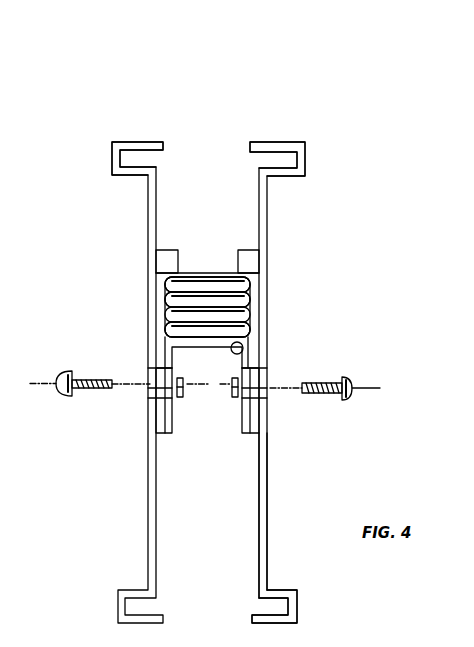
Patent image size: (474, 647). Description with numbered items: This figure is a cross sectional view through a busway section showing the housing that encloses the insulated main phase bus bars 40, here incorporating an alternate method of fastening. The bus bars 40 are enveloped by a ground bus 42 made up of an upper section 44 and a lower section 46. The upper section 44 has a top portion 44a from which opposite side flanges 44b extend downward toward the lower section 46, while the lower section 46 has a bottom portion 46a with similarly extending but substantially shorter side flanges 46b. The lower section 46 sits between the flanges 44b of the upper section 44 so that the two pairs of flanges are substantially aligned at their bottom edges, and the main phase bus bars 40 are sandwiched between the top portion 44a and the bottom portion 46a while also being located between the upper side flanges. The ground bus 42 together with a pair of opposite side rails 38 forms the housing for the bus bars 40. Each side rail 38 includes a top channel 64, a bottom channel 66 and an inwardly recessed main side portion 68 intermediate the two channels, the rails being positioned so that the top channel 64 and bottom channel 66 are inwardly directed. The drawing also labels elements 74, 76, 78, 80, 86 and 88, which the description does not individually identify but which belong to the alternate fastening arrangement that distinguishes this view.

The side rails 38 is at (147, 518).
The upper left hook 86 is at (175, 250).
The top channel 64 is at (302, 150).
The main side portion 68 is at (262, 502).
The bottom channel 66 is at (293, 607).
The top mounting block 88 is at (258, 277).
The ground bus 42 is at (187, 274).
The top portion 44a is at (203, 274).
The upper section 44 is at (215, 274).
The flanges 44b is at (173, 325).
The main phase bus bars 40 is at (247, 290).
The lower section 46 is at (247, 348).
The bottom portion 46a is at (243, 354).
The side flanges 46b is at (250, 425).
The mounting block 76 is at (156, 393).
The washer 78 is at (150, 390).
The left screw 80 is at (110, 388).
The right screw 74 is at (352, 385).